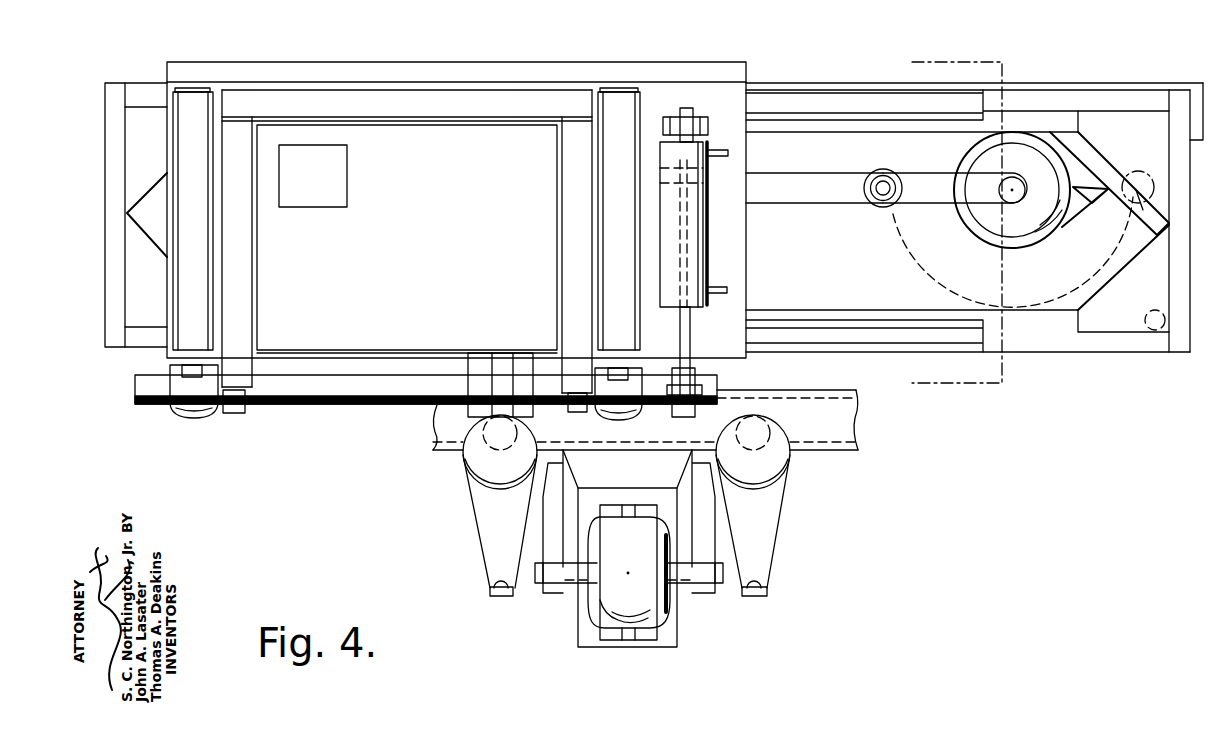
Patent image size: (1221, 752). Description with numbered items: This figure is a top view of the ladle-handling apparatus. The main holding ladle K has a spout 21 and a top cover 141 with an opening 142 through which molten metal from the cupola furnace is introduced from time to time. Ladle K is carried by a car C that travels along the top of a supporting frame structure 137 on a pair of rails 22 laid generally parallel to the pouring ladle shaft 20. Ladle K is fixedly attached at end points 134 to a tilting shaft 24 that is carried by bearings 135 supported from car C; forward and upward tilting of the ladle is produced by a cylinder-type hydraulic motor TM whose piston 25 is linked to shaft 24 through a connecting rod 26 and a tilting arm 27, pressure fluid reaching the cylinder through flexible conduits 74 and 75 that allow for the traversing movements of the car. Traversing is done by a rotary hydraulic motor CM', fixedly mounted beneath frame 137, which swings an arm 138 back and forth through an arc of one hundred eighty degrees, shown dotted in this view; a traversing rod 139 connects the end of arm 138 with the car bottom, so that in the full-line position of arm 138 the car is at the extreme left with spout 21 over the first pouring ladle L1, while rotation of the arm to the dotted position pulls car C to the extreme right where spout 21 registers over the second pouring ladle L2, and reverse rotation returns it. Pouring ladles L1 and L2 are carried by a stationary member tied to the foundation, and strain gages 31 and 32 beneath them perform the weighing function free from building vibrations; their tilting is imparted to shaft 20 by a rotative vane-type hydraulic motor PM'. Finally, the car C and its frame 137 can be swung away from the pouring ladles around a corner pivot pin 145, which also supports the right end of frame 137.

The car C is at (302, 60).
The main holding ladle K is at (428, 88).
The top cover 141 is at (473, 133).
The opening 142 is at (347, 181).
The frame structure 137 is at (130, 278).
The bearings 135 is at (191, 419).
The end points 134 is at (235, 413).
The shaft 24 is at (135, 387).
The spout 21 is at (502, 373).
The hydraulic motor TM is at (708, 245).
The piston 25 is at (692, 162).
The conduit 74 is at (718, 157).
The conduit 75 is at (715, 286).
The connecting rod 26 is at (690, 336).
The tilting arm 27 is at (680, 416).
The strain gage 31 is at (483, 445).
The strain gage 32 is at (763, 445).
The left pouring ladle L1 is at (500, 525).
The right pouring ladle L2 is at (753, 525).
The pouring ladle shaft 20 is at (573, 590).
The rotative hydraulic motor PM' is at (656, 580).
The rails 22 is at (962, 100).
The traversing rod 139 is at (827, 175).
The motor arm 138 is at (943, 173).
The rotary hydraulic motor CM' is at (1013, 219).
The corner pivot pin 145 is at (1147, 314).